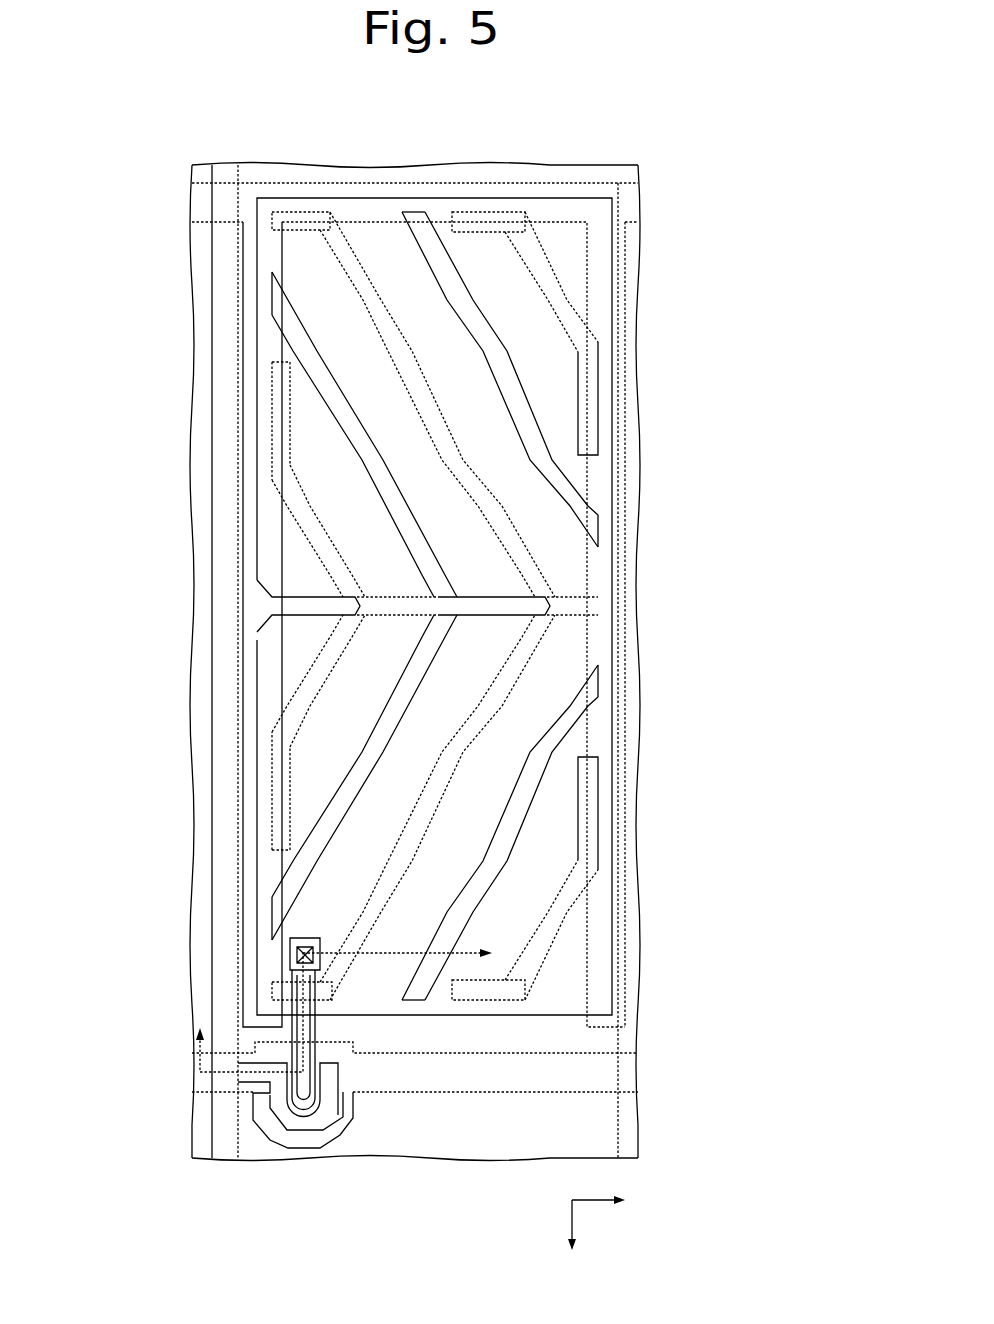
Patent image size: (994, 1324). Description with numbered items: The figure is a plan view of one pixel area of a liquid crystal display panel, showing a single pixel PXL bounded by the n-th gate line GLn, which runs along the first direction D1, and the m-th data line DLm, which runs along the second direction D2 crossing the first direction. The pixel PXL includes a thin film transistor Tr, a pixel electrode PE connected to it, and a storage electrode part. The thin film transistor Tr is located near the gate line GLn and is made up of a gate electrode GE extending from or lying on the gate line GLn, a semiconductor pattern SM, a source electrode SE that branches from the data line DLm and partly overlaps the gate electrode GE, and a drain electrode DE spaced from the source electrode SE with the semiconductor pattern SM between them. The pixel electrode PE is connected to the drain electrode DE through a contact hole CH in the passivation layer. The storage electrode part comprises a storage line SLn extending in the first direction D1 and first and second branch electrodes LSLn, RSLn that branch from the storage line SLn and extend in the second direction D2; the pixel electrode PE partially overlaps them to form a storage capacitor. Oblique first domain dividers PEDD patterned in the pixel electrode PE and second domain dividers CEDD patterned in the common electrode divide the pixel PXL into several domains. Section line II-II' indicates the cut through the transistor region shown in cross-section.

The pixel PXL is at (496, 184).
The storage line SLn is at (626, 200).
The first branch electrode LSLn is at (200, 203).
The second branch electrode RSLn is at (626, 478).
The data line DLm is at (222, 594).
The gate line GLn is at (626, 1068).
The pixel electrode PE is at (620, 570).
The first domain divider PEDD is at (560, 705).
The second domain divider CEDD is at (598, 820).
The contact hole CH is at (290, 949).
The drain electrode DE is at (270, 1120).
The source electrode SE is at (296, 1125).
The semiconductor pattern SM is at (314, 1132).
The gate electrode GE is at (342, 1140).
The thin film transistor Tr is at (372, 1218).
The section line II is at (249, 1012).
The section line II' is at (409, 956).
The first direction D1 is at (614, 1200).
The second direction D2 is at (573, 1238).